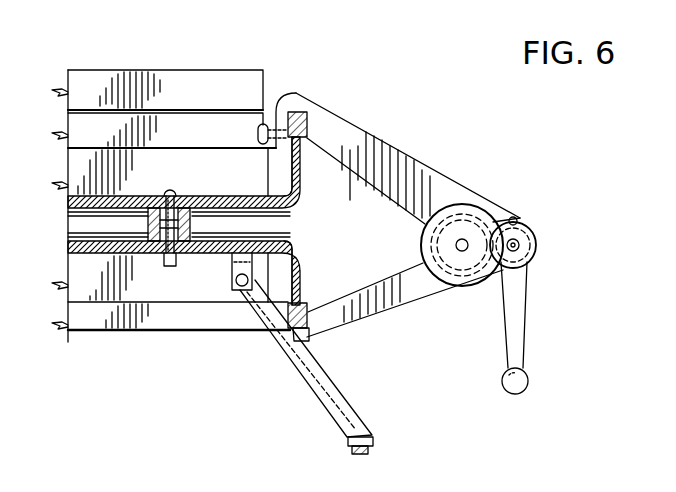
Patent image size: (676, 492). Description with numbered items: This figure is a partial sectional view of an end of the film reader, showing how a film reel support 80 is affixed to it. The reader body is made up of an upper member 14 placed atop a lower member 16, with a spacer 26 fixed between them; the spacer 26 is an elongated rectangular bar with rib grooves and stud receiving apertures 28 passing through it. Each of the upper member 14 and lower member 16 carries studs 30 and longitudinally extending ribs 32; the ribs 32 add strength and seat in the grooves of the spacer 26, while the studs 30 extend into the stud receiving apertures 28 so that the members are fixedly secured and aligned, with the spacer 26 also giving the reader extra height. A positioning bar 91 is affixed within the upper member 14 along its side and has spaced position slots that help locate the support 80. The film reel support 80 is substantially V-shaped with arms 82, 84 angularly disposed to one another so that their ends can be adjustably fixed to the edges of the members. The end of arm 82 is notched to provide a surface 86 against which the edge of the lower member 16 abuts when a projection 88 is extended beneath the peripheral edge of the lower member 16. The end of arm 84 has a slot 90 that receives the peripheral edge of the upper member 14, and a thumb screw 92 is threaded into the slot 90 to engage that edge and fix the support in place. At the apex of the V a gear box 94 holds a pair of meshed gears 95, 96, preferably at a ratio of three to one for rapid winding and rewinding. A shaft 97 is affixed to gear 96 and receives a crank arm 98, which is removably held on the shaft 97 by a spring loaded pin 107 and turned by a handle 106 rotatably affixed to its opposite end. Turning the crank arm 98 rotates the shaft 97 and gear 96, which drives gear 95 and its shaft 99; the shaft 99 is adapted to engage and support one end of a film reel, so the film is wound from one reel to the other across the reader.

The upper member 14 is at (300, 190).
The lower member 16 is at (302, 262).
The spacer 26 is at (196, 225).
The stud receiving aperture 28 is at (68, 226).
The stud 30 is at (164, 194).
The rib 32 is at (68, 216).
The film reel support 80 is at (408, 216).
The arm 82 is at (408, 300).
The arm 84 is at (360, 128).
The surface 86 is at (318, 322).
The projection 88 is at (300, 342).
The slot 90 is at (297, 118).
The positioning bar 91 is at (268, 168).
The thumb screw 92 is at (263, 124).
The gear box 94 is at (493, 220).
The gear 95 is at (470, 268).
The gear 96 is at (538, 250).
The shaft 97 is at (525, 238).
The crank arm 98 is at (527, 312).
The shaft 99 is at (462, 238).
The handle 106 is at (529, 384).
The spring loaded pin 107 is at (515, 218).